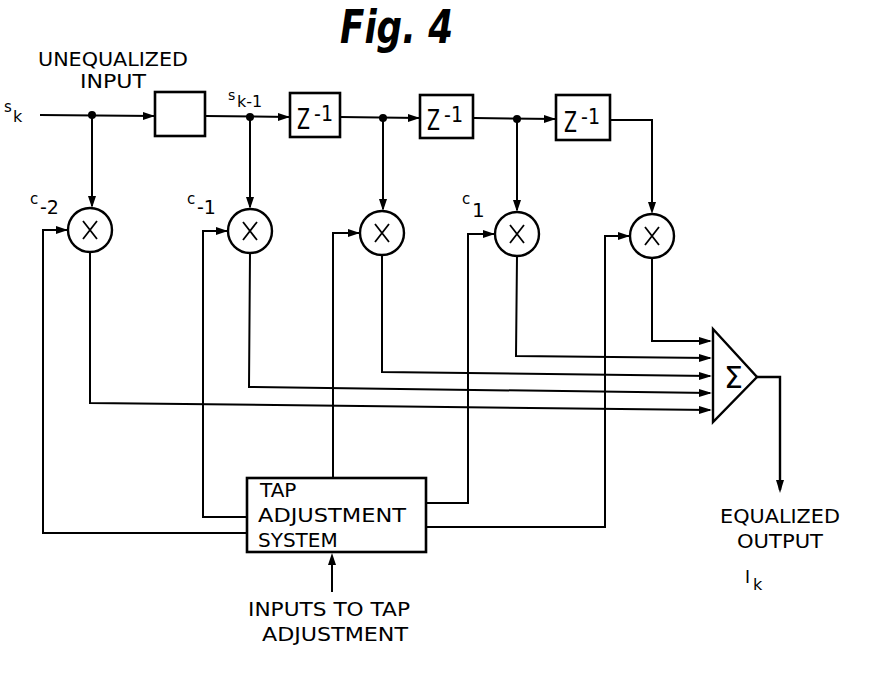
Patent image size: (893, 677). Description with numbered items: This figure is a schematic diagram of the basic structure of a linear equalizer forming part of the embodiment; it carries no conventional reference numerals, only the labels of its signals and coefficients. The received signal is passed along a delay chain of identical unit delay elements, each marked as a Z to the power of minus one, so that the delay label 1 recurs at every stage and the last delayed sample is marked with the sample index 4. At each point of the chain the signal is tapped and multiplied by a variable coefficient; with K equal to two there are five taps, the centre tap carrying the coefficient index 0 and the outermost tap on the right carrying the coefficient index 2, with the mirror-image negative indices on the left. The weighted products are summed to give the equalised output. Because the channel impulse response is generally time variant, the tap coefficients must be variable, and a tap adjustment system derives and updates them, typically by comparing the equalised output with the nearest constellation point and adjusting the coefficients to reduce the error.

The unit delay element Z^- 1 is at (180, 114).
The center tap multiplier with coefficient c0 0 is at (366, 334).
The tap multiplier with coefficient c2 2 is at (550, 358).
The delayed input sample s_k- 4 is at (636, 151).